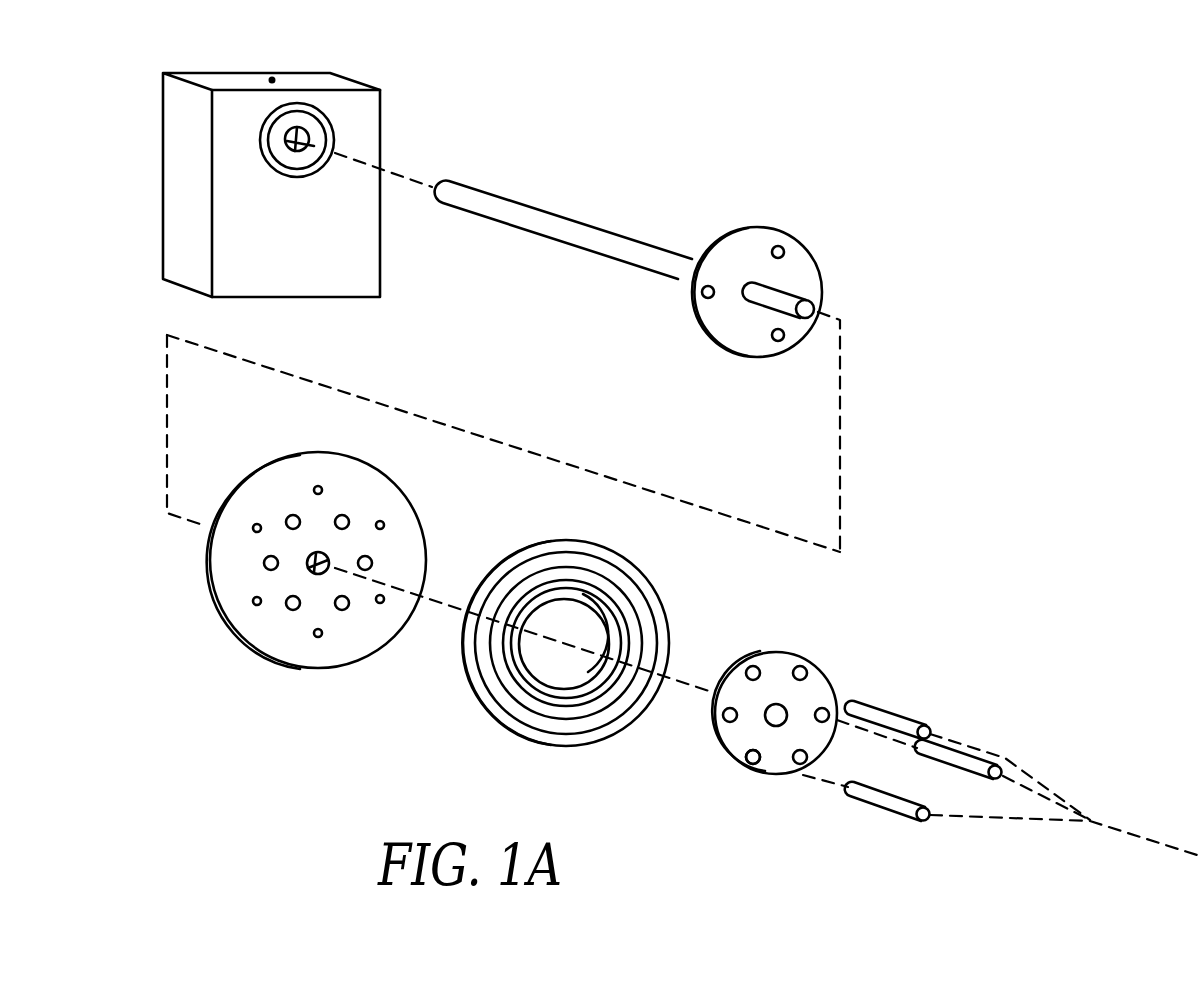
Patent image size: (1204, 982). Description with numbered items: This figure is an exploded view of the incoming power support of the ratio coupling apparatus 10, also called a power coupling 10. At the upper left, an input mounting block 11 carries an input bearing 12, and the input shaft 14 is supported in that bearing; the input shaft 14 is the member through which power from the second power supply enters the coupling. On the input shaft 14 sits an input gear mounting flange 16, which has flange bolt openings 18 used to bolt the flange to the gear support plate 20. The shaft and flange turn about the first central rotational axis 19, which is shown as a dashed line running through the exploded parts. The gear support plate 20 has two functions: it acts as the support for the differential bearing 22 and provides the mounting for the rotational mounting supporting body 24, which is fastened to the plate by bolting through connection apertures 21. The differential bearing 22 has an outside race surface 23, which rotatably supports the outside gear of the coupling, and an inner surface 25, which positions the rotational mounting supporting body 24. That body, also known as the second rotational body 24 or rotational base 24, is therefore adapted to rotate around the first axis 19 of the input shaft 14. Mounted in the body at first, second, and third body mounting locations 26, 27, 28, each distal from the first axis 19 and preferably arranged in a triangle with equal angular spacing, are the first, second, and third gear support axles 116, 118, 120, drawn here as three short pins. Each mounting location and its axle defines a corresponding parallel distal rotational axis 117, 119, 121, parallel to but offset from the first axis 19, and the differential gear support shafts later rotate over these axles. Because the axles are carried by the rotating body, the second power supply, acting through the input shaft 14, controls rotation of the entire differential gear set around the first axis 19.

The ratio coupling apparatus 10 is at (698, 141).
The input mounting block 11 is at (381, 94).
The input bearing 12 is at (335, 141).
The input shaft 14 is at (507, 197).
The input gear mounting flange 16 is at (770, 228).
The flange bolt openings 18 is at (784, 250).
The first central rotational axis 19 is at (813, 304).
The gear support plate 20 is at (385, 473).
The connection apertures 21 is at (342, 611).
The differential bearing 22 is at (586, 627).
The outside race surface 23 is at (580, 546).
The rotational mounting supporting body 24 is at (760, 654).
The inner surface 25 is at (620, 637).
The first body mounting location 26 is at (821, 706).
The second body mounting location 27 is at (746, 667).
The third body mounting location 28 is at (752, 766).
The first gear support axle 116 is at (927, 729).
The first distal rotational axis 117 is at (850, 700).
The second gear support axle 118 is at (999, 764).
The second distal rotational axis 119 is at (886, 716).
The third gear support axle 120 is at (898, 818).
The third distal rotational axis 121 is at (810, 782).